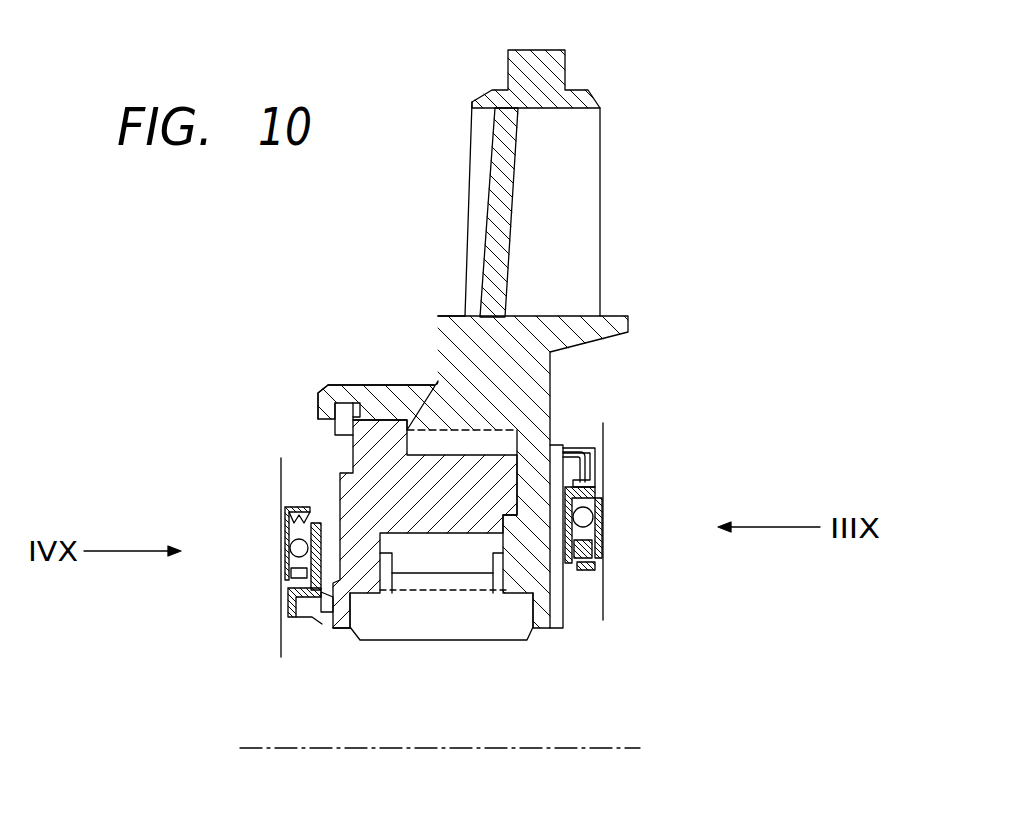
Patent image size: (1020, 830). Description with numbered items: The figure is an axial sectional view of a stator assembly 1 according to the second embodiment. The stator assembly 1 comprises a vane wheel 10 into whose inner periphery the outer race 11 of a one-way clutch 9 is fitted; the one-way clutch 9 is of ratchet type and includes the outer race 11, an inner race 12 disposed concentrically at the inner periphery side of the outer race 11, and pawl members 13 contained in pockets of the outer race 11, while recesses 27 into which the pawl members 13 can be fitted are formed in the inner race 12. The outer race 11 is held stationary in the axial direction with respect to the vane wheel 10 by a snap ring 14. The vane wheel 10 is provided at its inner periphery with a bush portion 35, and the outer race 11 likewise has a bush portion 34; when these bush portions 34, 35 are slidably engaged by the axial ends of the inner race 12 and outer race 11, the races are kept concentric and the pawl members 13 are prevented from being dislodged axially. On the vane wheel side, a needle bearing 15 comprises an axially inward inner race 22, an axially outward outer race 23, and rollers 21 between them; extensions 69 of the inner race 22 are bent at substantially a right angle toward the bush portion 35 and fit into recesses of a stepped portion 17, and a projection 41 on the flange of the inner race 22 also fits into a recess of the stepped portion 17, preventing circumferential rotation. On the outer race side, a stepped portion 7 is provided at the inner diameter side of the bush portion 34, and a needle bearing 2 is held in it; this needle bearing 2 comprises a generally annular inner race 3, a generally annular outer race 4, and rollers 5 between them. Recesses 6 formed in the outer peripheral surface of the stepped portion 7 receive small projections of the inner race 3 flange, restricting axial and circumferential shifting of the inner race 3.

The stator assembly 1 is at (624, 66).
The needle bearing 2 is at (268, 473).
The inner race 3 is at (286, 550).
The outer race 4 is at (284, 532).
The rollers 5 is at (282, 570).
The recesses 6 is at (296, 607).
The stepped portion 7 is at (312, 622).
The one-way clutch 9 is at (335, 643).
The vane wheel 10 is at (585, 215).
The outer race 11 is at (367, 452).
The inner race 12 is at (377, 624).
The pawl members 13 is at (470, 565).
The snap ring 14 is at (327, 403).
The needle bearing 15 is at (582, 593).
The stepped portion 17 is at (590, 461).
The rollers 21 is at (593, 512).
The inner race 22 is at (594, 531).
The outer race 23 is at (597, 572).
The recesses 27 is at (437, 577).
The bush portion 34 is at (320, 605).
The bush portion 35 is at (513, 592).
The projection 41 is at (596, 480).
The extensions 69 is at (585, 445).